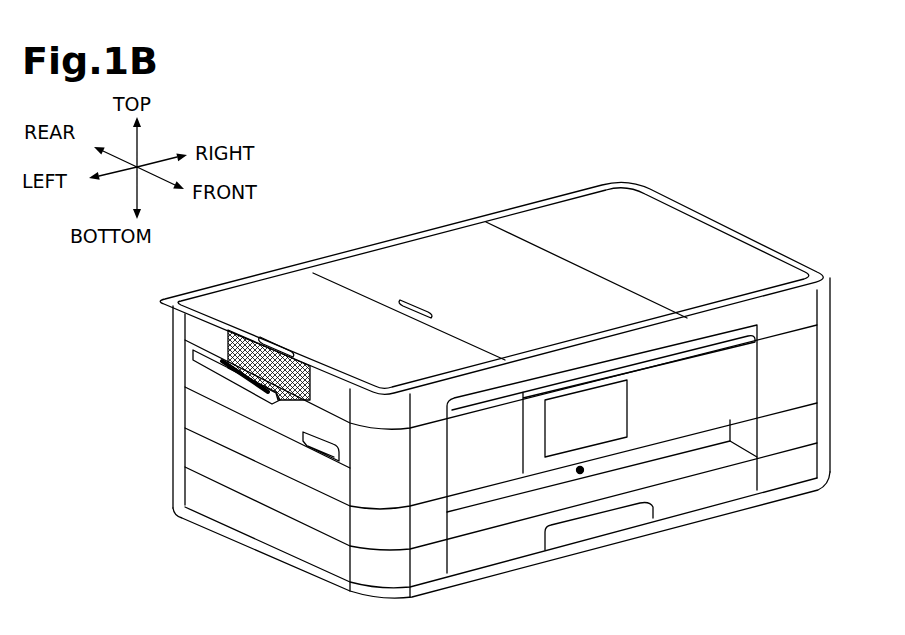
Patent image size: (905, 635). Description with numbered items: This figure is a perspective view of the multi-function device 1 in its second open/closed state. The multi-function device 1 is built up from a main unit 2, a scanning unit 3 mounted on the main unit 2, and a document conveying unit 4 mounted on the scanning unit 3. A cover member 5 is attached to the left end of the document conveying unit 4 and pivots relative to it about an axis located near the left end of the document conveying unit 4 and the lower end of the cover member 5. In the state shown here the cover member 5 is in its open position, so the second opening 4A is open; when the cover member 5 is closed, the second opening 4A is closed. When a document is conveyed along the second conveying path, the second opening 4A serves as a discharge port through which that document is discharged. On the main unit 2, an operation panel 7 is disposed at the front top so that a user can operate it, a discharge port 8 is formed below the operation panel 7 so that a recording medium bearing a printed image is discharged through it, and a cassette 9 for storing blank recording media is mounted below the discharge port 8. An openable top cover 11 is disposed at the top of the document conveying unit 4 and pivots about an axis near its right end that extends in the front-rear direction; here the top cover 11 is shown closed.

The multi-function device 1 is at (376, 197).
The main unit 2 is at (175, 481).
The scanning unit 3 is at (172, 362).
The document conveying unit 4 is at (228, 284).
The second opening 4A is at (239, 328).
The cover member 5 is at (257, 393).
The operation panel 7 is at (667, 400).
The discharge port 8 is at (585, 471).
The cassette 9 is at (492, 546).
The top cover 11 is at (467, 226).